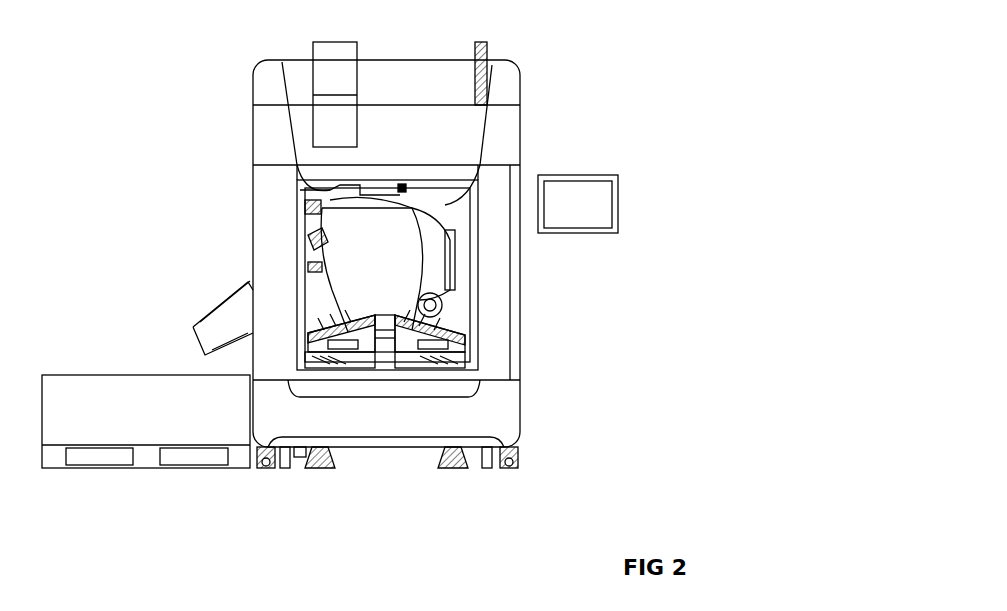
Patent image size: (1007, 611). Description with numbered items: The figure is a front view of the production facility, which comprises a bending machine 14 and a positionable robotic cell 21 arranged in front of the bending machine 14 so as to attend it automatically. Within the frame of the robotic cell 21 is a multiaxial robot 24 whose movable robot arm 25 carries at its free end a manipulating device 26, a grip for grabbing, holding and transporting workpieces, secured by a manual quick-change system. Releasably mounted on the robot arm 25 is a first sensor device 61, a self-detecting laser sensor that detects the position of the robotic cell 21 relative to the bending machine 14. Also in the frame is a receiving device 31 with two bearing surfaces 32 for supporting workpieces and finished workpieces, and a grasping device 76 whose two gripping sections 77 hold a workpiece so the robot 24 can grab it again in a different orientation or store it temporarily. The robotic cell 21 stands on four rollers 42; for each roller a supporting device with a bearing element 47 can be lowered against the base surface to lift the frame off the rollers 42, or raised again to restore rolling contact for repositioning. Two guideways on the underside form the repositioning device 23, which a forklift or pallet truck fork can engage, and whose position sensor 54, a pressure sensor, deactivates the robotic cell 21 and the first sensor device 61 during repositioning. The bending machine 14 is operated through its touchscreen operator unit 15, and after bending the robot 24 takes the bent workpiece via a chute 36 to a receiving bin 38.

The bending machine 14 is at (505, 133).
The operator unit 15 is at (618, 203).
The robotic cell 21 is at (542, 384).
The repositioning device 23 is at (310, 457).
The robot 24 is at (475, 257).
The robot arm 25 is at (380, 195).
The manipulating device 26 is at (330, 203).
The receiving device 31 is at (388, 430).
The bearing surfaces 32 is at (300, 238).
The chute 36 is at (226, 338).
The receiving bin 38 is at (110, 425).
The rollers 42 is at (265, 462).
The bearing element 47 is at (275, 462).
The position sensor 54 is at (298, 457).
The first sensor device 61 is at (330, 188).
The grasping device 76 is at (330, 250).
The gripping sections 77 is at (330, 253).